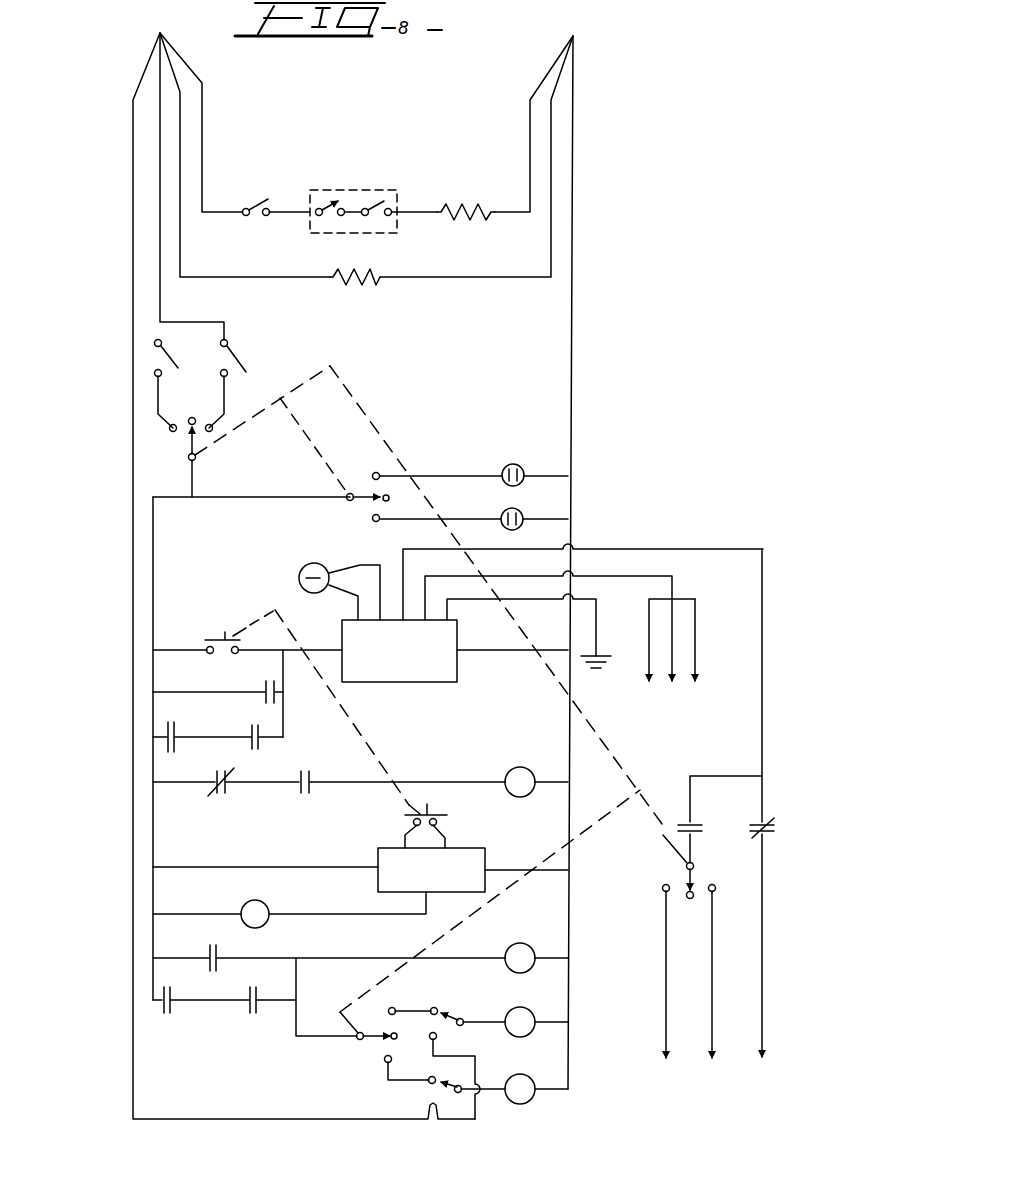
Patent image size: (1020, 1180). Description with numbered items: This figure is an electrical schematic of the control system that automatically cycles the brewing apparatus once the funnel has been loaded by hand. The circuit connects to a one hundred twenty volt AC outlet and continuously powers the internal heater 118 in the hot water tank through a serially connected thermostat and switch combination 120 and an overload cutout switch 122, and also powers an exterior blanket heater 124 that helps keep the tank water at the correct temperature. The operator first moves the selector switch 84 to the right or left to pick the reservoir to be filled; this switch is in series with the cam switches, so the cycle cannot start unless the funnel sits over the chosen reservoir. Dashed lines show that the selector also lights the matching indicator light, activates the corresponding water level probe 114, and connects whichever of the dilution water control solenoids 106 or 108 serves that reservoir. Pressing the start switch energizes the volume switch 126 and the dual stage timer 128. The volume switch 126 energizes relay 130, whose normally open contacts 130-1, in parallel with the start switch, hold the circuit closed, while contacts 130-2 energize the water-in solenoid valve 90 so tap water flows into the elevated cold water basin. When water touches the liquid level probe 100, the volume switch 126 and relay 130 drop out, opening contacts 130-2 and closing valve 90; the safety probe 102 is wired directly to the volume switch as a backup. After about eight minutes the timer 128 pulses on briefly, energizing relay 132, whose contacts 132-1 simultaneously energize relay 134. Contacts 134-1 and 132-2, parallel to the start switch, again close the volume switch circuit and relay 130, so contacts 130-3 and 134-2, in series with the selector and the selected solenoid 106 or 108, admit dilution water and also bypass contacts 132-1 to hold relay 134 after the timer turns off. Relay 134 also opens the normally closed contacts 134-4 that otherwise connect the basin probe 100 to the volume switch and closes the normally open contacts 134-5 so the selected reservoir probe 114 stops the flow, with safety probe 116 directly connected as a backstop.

The overload cutout switch 122 is at (264, 200).
The thermostat and switch combination 120 is at (380, 190).
The internal heater 118 is at (478, 207).
The exterior blanket heater 124 is at (370, 280).
The selector switch 84 is at (188, 457).
The relay 130 is at (300, 576).
The volume switch 126 is at (393, 683).
The relay contacts 130-1 is at (232, 690).
The relay contacts 134-1 is at (174, 735).
The relay contacts 132-2 is at (252, 742).
The relay contacts 130-2 is at (320, 756).
The water-in solenoid valve 90 is at (516, 768).
The dual stage timer 128 is at (378, 855).
The relay 132 is at (262, 905).
The relay contacts 132-1 is at (216, 952).
The relay 134 is at (517, 945).
The dilution water control solenoid 108 is at (518, 1010).
The dilution water control solenoid 106 is at (524, 1104).
The relay contacts 130-3 is at (166, 1012).
The relay contacts 134-2 is at (252, 1012).
The relay contacts 134-5 is at (684, 820).
The relay contacts 134-4 is at (770, 826).
The safety probe 116 is at (675, 690).
The safety probe 102 is at (700, 690).
The water level probe 114 is at (708, 1060).
The liquid level probe 100 is at (766, 1060).